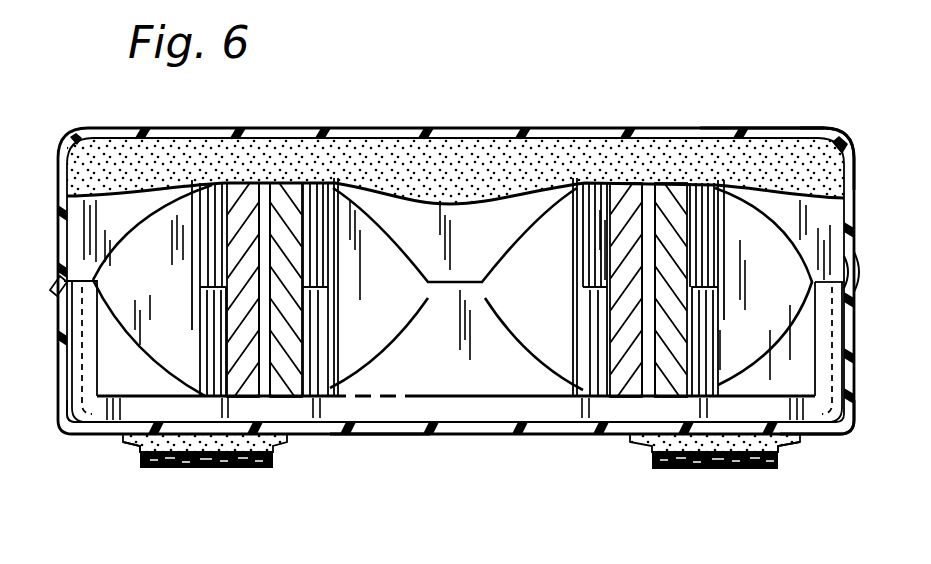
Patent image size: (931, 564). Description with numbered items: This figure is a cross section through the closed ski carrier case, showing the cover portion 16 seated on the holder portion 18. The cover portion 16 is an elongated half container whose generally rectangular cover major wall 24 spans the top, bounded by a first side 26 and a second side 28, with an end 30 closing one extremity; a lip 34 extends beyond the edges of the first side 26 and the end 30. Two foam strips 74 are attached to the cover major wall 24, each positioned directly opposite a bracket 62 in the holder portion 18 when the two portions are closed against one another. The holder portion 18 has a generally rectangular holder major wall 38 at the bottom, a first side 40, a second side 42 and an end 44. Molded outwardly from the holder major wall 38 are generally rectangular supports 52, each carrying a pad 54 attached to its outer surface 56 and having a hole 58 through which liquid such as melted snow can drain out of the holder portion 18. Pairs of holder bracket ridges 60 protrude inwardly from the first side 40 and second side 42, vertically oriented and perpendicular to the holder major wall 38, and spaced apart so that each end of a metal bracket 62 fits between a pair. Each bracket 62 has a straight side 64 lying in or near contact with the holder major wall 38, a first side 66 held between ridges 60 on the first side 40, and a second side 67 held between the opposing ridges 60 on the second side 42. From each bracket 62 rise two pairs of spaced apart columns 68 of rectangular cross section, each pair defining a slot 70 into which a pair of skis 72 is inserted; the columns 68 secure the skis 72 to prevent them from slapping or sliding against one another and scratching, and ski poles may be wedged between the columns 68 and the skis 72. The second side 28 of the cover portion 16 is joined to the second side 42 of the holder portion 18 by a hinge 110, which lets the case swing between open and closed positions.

The cover portion 16 is at (818, 125).
The holder portion 18 is at (813, 457).
The cover major wall 24 is at (463, 126).
The first side 26 is at (58, 172).
The second side 28 is at (850, 155).
The end 30 is at (393, 213).
The lip 34 is at (52, 285).
The holder major wall 38 is at (410, 433).
The first side 40 is at (63, 333).
The second side 42 is at (848, 343).
The end 44 is at (538, 383).
The support 52 is at (215, 447).
The pad 54 is at (180, 458).
The outer surface 56 is at (165, 457).
The hole 58 is at (137, 442).
The holder bracket ridge 60 is at (72, 368).
The bracket 62 is at (373, 413).
The straight side 64 is at (352, 436).
The first side 66 is at (64, 400).
The second side 67 is at (850, 308).
The column 68 is at (593, 312).
The slot 70 is at (283, 390).
The ski 72 is at (285, 210).
The foam strip 74 is at (760, 152).
The hinge 110 is at (850, 282).